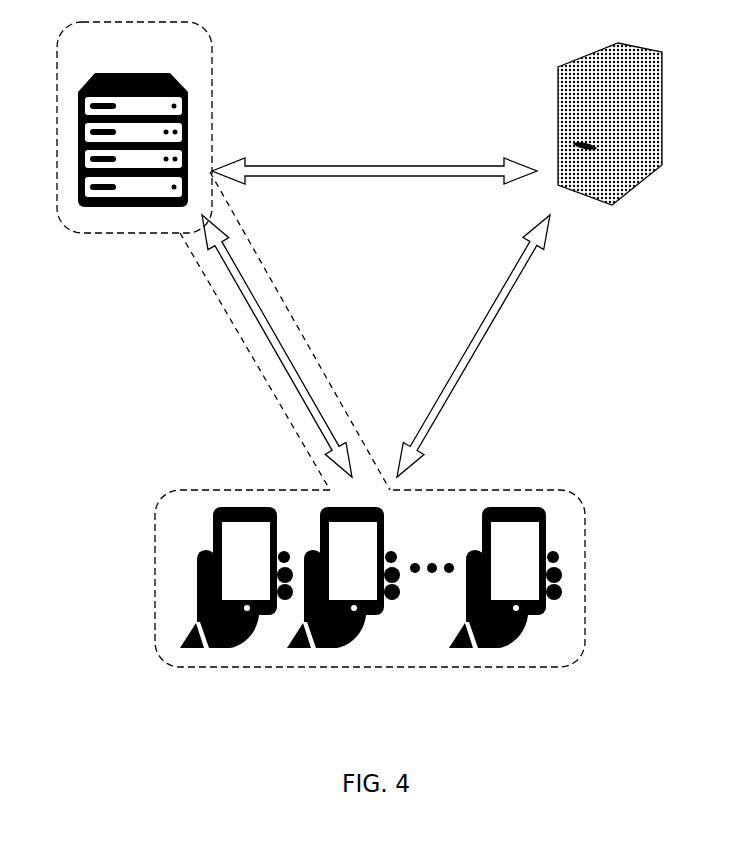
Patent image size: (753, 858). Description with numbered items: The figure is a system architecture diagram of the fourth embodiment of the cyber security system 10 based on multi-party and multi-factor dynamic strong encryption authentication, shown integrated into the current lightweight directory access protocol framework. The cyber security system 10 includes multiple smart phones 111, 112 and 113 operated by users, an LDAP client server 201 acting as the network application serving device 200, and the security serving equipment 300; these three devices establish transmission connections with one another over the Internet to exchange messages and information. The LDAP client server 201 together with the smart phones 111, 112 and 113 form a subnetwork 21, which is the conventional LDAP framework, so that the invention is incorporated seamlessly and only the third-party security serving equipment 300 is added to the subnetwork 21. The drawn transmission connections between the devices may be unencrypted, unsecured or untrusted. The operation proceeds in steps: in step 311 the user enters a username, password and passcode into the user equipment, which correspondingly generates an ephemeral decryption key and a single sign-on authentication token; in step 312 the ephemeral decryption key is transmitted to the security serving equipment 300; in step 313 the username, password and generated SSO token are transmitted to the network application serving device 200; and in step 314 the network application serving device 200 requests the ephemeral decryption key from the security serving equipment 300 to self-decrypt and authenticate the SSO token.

The cyber security system 10 is at (388, 287).
The subnetwork 21 is at (273, 390).
The smart phone 111 is at (236, 577).
The smart phone 112 is at (343, 577).
The smart phone 113 is at (505, 577).
The network application serving device 200 is at (134, 127).
The LDAP client server 201 is at (134, 127).
The security serving equipment 300 is at (610, 108).
The step 311 is at (370, 598).
The step 312 is at (491, 346).
The step 313 is at (246, 346).
The step 314 is at (374, 171).